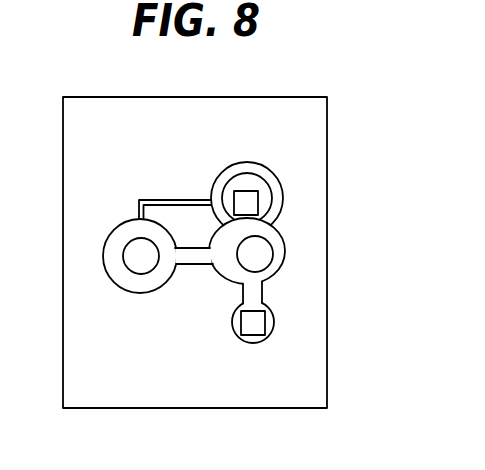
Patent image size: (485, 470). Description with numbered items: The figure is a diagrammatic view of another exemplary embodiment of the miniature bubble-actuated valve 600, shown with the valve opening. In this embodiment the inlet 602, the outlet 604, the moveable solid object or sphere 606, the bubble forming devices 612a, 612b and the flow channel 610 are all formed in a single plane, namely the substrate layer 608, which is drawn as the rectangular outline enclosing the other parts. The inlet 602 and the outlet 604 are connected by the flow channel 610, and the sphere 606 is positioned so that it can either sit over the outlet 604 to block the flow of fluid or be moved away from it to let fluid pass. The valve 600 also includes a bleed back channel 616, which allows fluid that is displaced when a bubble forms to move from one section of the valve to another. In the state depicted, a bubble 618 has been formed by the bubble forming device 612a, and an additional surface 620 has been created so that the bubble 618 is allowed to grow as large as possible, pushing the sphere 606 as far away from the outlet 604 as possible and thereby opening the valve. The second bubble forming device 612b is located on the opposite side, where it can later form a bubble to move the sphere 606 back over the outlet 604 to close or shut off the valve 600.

The bubble-actuated valve 600 is at (275, 85).
The inlet 602 is at (125, 240).
The outlet 604 is at (260, 254).
The sphere 606 is at (248, 177).
The substrate layer 608 is at (108, 95).
The flow channel 610 is at (195, 257).
The bubble forming device 612a is at (257, 323).
The bubble forming device 612b is at (260, 190).
The bleed back channel 616 is at (160, 198).
The bubble 618 is at (263, 226).
The additional surface 620 is at (212, 233).